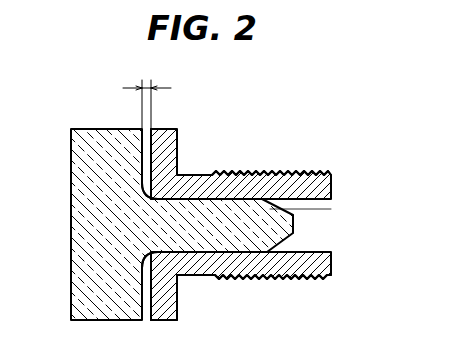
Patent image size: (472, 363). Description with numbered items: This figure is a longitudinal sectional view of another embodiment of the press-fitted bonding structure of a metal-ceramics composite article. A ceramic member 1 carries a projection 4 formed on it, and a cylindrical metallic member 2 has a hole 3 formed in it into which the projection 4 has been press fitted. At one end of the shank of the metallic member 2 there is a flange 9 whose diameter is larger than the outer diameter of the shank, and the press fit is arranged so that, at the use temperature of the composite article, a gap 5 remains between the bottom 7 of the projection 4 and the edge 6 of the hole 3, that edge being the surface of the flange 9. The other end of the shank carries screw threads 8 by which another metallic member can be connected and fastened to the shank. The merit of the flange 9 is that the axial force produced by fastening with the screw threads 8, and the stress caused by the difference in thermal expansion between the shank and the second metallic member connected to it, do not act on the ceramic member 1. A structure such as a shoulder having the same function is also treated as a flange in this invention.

The ceramic member 1 is at (94, 137).
The cylindrical metallic member 2 is at (303, 274).
The hole 3 is at (318, 236).
The projection 4 is at (198, 198).
The gap 5 is at (147, 93).
The edge 6 is at (146, 321).
The bottom 7 is at (155, 128).
The screw threads 8 is at (277, 172).
The flange 9 is at (178, 300).